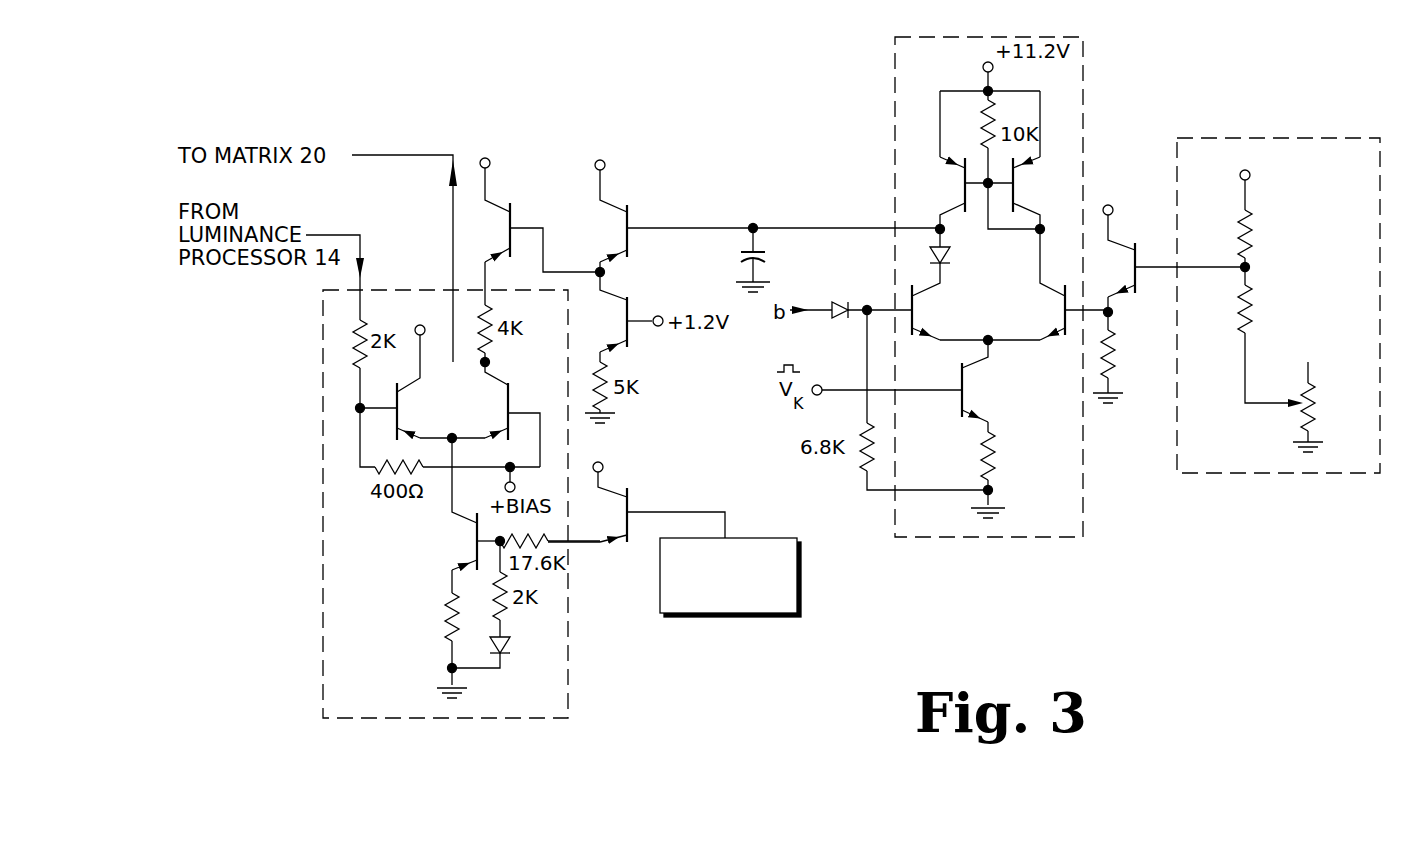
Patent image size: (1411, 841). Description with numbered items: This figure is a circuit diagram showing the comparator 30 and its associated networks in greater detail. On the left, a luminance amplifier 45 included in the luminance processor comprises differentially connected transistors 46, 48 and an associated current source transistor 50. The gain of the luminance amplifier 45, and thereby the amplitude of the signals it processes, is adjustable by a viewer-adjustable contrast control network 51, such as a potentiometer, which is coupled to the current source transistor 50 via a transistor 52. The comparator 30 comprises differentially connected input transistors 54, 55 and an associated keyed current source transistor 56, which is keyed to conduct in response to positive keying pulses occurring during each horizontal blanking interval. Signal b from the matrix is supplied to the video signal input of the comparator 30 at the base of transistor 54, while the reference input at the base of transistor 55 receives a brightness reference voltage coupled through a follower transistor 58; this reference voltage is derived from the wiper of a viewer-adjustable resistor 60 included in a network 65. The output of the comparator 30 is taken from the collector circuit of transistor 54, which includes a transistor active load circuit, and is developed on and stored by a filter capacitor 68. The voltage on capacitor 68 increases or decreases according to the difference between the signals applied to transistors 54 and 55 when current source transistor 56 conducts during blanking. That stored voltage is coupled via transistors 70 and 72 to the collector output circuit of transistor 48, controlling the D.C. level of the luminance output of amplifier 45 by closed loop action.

The comparator 30 is at (895, 153).
The luminance amplifier 45 is at (323, 493).
The differentially connected transistor 46 is at (430, 420).
The differentially connected transistor 48 is at (497, 420).
The current source transistor 50 is at (462, 552).
The contrast control network 51 is at (732, 616).
The transistor 52 is at (620, 523).
The input transistor 54 is at (946, 328).
The input transistor 55 is at (1059, 328).
The keyed current source transistor 56 is at (1000, 400).
The follower transistor 58 is at (1124, 280).
The viewer adjustable resistor 60 is at (1270, 443).
The network 65 is at (1312, 474).
The filter capacitor 68 is at (746, 258).
The transistor 70 is at (617, 245).
The transistor 72 is at (505, 247).